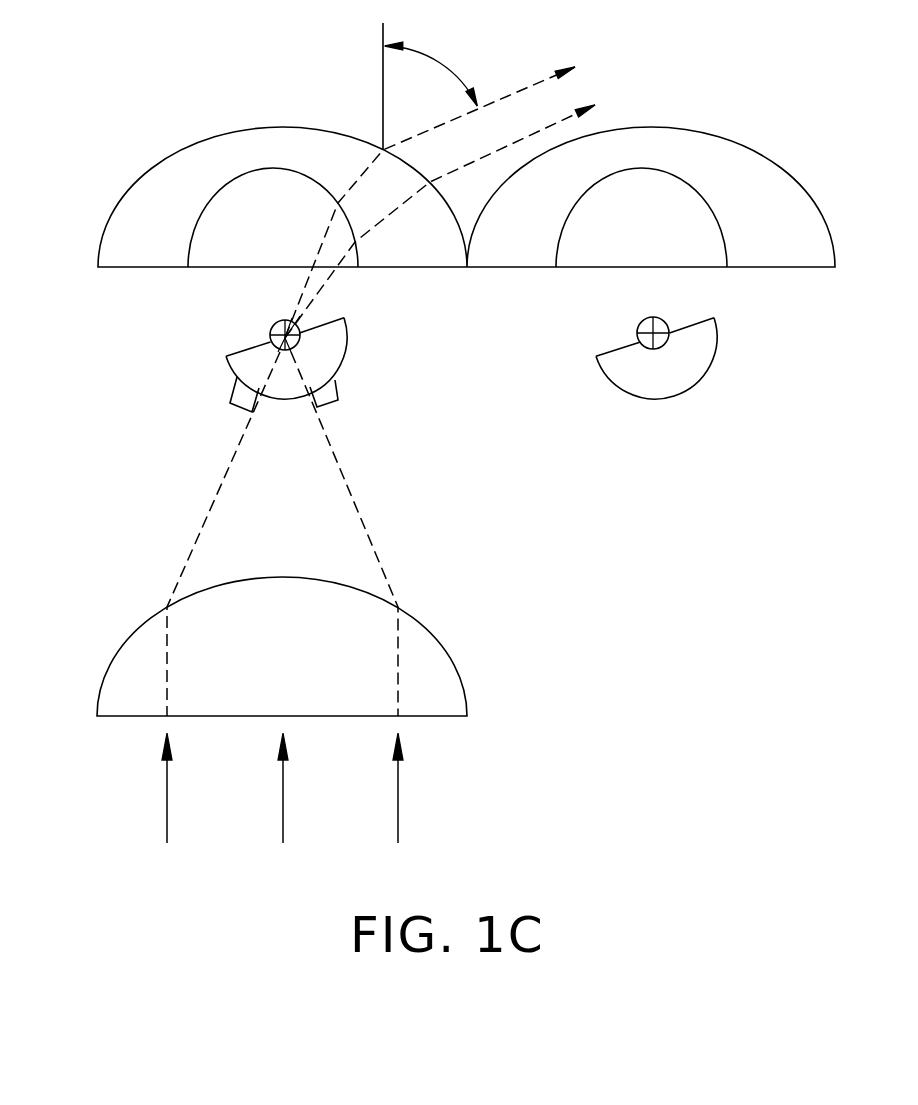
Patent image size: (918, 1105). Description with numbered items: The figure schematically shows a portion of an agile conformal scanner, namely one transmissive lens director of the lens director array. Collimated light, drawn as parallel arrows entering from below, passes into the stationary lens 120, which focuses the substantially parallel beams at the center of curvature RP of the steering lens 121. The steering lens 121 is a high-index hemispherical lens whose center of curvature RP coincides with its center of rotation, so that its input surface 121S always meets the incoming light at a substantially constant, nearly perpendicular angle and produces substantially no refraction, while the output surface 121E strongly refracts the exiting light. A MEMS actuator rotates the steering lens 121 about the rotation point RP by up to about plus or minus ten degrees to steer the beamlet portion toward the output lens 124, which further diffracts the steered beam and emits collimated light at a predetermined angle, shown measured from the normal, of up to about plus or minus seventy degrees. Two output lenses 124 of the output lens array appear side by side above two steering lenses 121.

The output lens 124 is at (135, 180).
The steering lens 121 is at (231, 368).
The output surface 121E is at (248, 343).
The input surface 121S is at (284, 400).
The center of curvature RP is at (300, 344).
The stationary lens 120 is at (433, 635).